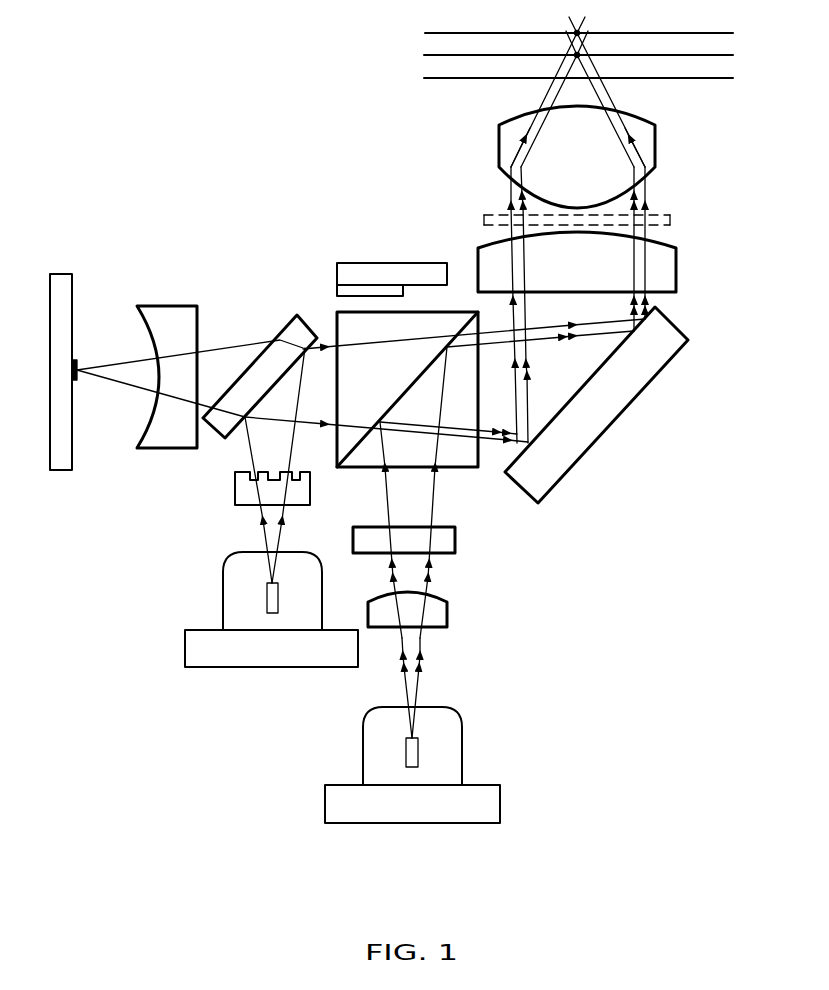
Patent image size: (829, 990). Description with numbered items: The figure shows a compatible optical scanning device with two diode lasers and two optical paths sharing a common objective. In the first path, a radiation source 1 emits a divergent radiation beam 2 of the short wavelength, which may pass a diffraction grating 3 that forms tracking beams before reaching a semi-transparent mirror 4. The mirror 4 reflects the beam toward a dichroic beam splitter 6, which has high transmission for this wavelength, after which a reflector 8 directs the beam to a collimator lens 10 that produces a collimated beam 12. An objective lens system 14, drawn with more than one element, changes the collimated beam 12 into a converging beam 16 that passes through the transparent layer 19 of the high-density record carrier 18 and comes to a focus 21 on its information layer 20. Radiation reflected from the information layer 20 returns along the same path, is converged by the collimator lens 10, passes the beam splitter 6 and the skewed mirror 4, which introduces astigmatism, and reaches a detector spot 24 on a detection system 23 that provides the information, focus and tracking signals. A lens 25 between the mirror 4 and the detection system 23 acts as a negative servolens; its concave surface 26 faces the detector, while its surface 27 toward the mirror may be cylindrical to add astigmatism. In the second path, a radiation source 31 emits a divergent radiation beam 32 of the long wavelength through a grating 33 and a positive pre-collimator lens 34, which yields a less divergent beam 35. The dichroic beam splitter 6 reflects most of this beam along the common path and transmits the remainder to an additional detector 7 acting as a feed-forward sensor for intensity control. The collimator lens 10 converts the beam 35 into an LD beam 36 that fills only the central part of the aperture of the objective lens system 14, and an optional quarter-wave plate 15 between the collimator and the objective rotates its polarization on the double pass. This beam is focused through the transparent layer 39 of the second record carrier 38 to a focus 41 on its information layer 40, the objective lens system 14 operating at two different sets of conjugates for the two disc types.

The radiation source 1 is at (222, 596).
The divergent radiation beam 2 is at (270, 538).
The diffraction grating 3 is at (233, 495).
The semi-transparent mirror 4 is at (296, 316).
The dichroic beam splitter 6 is at (463, 458).
The additional detector 7 is at (360, 263).
The reflector 8 is at (578, 439).
The collimator lens 10 is at (678, 271).
The collimated beam 12 is at (509, 191).
The objective lens system 14 is at (657, 149).
The quarter-wave plate 15 is at (672, 220).
The converging beam 16 is at (553, 85).
The record carrier 18 is at (780, 30).
The transparent layer 19 is at (716, 68).
The information layer 20 is at (717, 50).
The focus 21 is at (578, 54).
The detection system 23 is at (62, 462).
The detector spot 24 is at (80, 369).
The lens 25 is at (170, 438).
The concave surface of lens 26 is at (150, 412).
The surface 27 is at (198, 322).
The radiation source 31 is at (447, 746).
The divergent radiation beam 32 is at (410, 684).
The grating 33 is at (450, 545).
The positive lens 34 is at (435, 614).
The less divergent beam 35 is at (413, 588).
The LD beam 36 is at (512, 231).
The record carrier 38 is at (378, 12).
The transparent layer 39 is at (440, 65).
The information layer 40 is at (442, 33).
The focus 41 is at (577, 33).